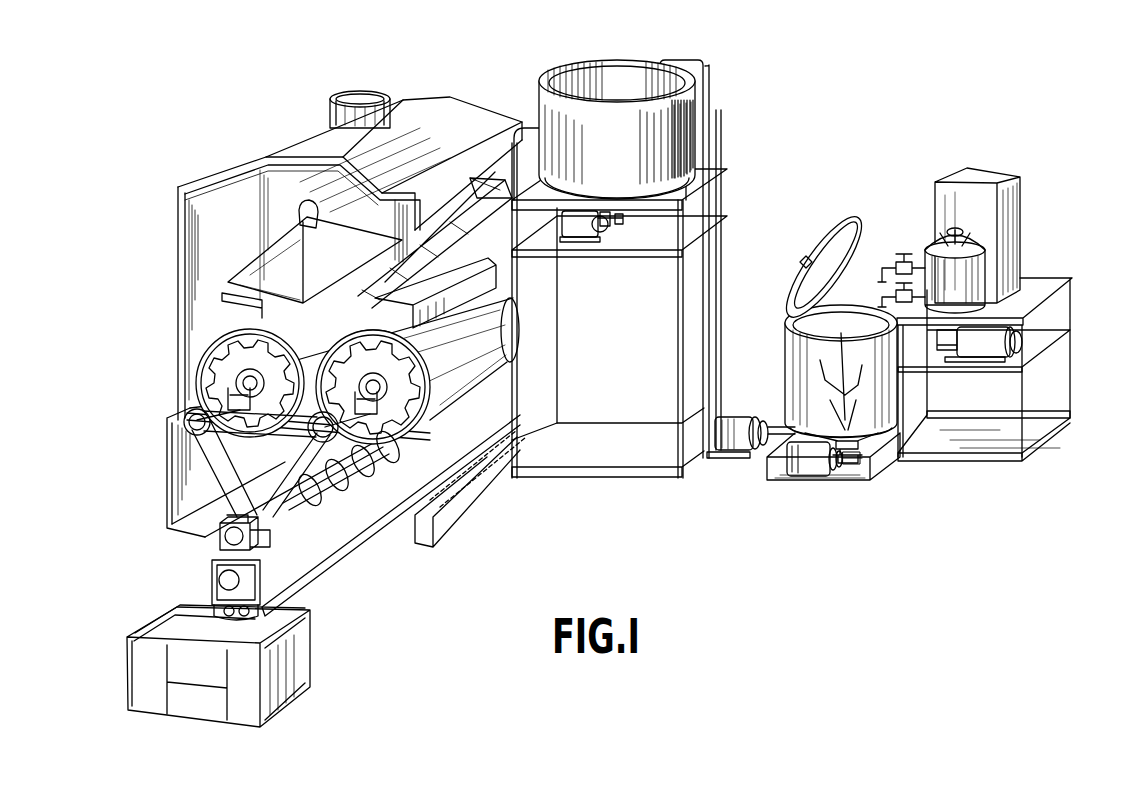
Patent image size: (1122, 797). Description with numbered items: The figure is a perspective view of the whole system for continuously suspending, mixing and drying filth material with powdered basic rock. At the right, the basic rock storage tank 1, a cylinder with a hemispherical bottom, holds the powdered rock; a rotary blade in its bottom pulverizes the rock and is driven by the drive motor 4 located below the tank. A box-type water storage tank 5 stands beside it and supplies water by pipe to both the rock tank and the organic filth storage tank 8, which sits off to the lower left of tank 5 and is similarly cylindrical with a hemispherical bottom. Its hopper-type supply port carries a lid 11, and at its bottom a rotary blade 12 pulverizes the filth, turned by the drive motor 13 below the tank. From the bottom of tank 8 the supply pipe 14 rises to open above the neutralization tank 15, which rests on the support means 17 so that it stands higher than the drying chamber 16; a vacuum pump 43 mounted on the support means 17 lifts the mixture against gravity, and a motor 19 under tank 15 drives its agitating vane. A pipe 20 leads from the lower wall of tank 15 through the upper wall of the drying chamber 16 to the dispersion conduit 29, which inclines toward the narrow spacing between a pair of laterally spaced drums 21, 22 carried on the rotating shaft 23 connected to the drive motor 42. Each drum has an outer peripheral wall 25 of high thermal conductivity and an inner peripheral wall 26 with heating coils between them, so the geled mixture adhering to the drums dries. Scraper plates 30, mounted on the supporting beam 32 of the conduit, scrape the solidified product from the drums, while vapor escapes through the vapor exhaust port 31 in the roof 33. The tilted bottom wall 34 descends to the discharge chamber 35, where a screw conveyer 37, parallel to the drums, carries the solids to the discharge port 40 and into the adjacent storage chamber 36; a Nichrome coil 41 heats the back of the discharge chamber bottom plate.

The basic rock storage tank 1 is at (985, 263).
The drive motor 4 is at (1000, 337).
The water storage tank 5 is at (975, 177).
The organic filth storage tank 8 is at (788, 353).
The lid 11 is at (832, 230).
The rotary blade 12 is at (887, 468).
The drive motor 13 is at (807, 480).
The supply pipe 14 is at (712, 100).
The neutralization tank 15 is at (585, 62).
The drying chamber 16 is at (410, 55).
The support means 17 is at (680, 365).
The motor 19 is at (587, 237).
The pipe 20 is at (476, 198).
The drum 21 is at (193, 375).
The drum 22 is at (480, 332).
The rotating shaft 23 is at (167, 437).
The outer peripheral wall 25 is at (217, 338).
The inner peripheral wall 26 is at (227, 358).
The dispersion conduit 29 is at (265, 260).
The scraper plate 30 is at (230, 310).
The vapor exhaust port 31 is at (330, 100).
The supporting beam 32 is at (477, 273).
The roof 33 is at (313, 143).
The bottom wall 34 is at (440, 427).
The discharge chamber 35 is at (303, 560).
The storage chamber 36 is at (135, 683).
The screw conveyer 37 is at (367, 528).
The discharge port 40 is at (210, 590).
The Nichrome coil 41 is at (300, 612).
The drive motor 42 is at (222, 538).
The vacuum pump 43 is at (737, 440).